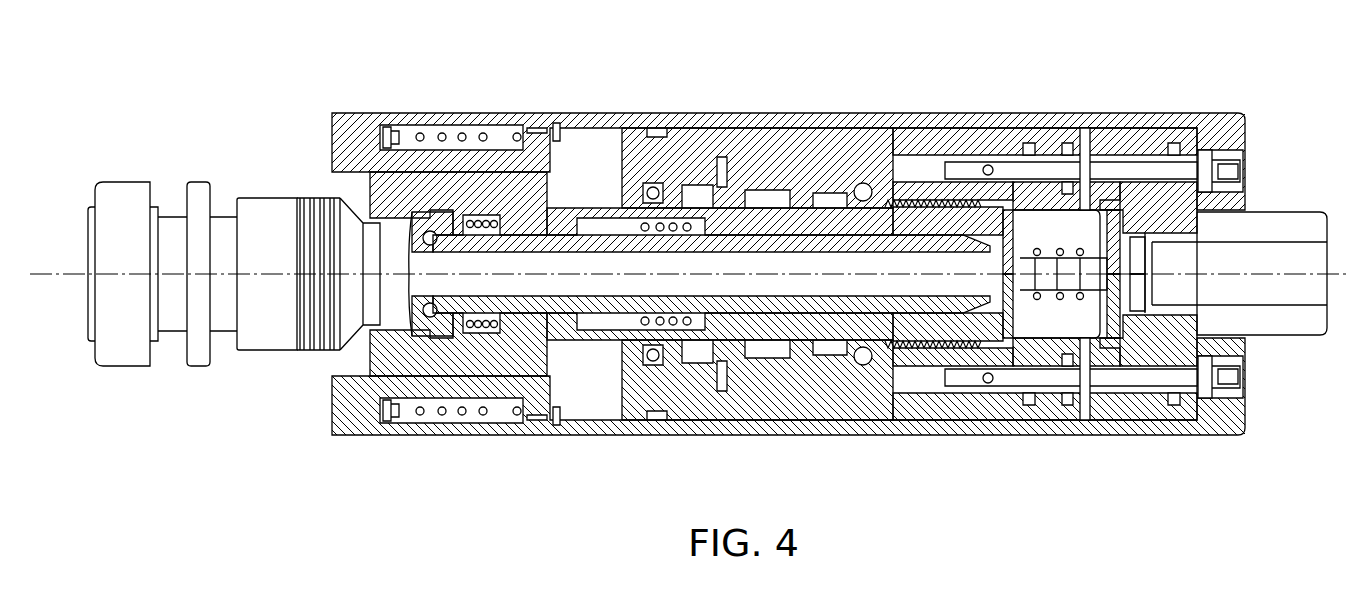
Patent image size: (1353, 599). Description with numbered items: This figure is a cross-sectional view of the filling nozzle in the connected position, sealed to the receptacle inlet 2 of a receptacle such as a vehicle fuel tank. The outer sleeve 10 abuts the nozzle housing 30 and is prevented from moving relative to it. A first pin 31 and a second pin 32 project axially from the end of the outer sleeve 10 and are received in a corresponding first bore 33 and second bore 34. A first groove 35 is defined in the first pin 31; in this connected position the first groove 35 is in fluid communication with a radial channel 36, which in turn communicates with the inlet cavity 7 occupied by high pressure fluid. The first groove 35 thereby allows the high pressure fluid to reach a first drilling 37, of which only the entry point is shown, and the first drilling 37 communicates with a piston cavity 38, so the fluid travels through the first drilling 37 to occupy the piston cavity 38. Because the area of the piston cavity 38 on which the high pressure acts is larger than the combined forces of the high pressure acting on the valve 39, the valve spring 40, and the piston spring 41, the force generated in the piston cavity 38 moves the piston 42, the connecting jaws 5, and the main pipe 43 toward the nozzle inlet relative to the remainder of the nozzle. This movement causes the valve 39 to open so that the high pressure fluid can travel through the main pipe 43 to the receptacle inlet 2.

The receptacle inlet 2 is at (251, 190).
The connecting jaws 5 is at (417, 124).
The inlet cavity 7 is at (1083, 314).
The outer sleeve 10 is at (466, 112).
The nozzle housing 30 is at (1152, 128).
The first pin 31 is at (1183, 168).
The second pin 32 is at (1179, 390).
The first bore 33 is at (886, 168).
The second bore 34 is at (889, 380).
The first groove 35 is at (1052, 150).
The radial channel 36 is at (1110, 185).
The first drilling 37 is at (964, 130).
The piston cavity 38 is at (741, 210).
The valve 39 is at (1047, 318).
The valve spring 40 is at (1098, 330).
The piston spring 41 is at (636, 128).
The piston 42 is at (773, 362).
The main pipe 43 is at (584, 197).